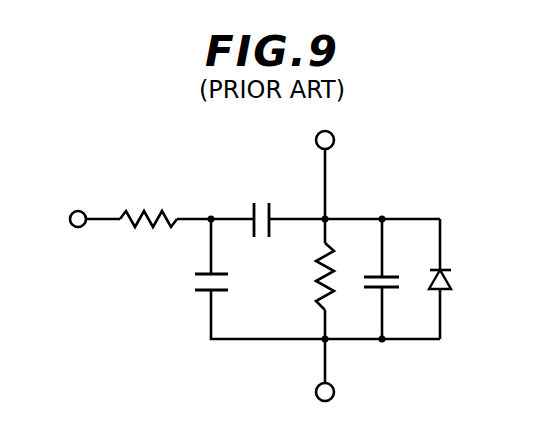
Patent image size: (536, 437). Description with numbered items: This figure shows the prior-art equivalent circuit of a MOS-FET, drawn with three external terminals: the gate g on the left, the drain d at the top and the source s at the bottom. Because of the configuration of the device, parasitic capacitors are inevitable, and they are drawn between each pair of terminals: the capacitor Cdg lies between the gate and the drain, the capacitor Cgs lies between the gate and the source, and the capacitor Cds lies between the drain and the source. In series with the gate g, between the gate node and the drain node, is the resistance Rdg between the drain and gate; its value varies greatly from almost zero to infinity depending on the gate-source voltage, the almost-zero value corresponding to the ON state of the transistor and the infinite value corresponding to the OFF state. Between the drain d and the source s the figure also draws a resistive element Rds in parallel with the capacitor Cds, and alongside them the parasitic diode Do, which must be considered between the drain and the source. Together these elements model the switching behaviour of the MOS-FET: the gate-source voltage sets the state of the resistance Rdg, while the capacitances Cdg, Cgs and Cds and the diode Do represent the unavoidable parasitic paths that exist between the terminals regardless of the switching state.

The gate g is at (66, 221).
The drain d is at (325, 128).
The source s is at (325, 406).
The resistance between the drain and gate Rdg is at (148, 202).
The parasitic capacitor between the gate and the drain Cdg is at (255, 206).
The parasitic capacitor between the gate and the source Cgs is at (187, 286).
The drain-source resistance Rds is at (300, 276).
The parasitic capacitor between the drain and the source Cds is at (394, 268).
The parasitic diode Do is at (452, 285).